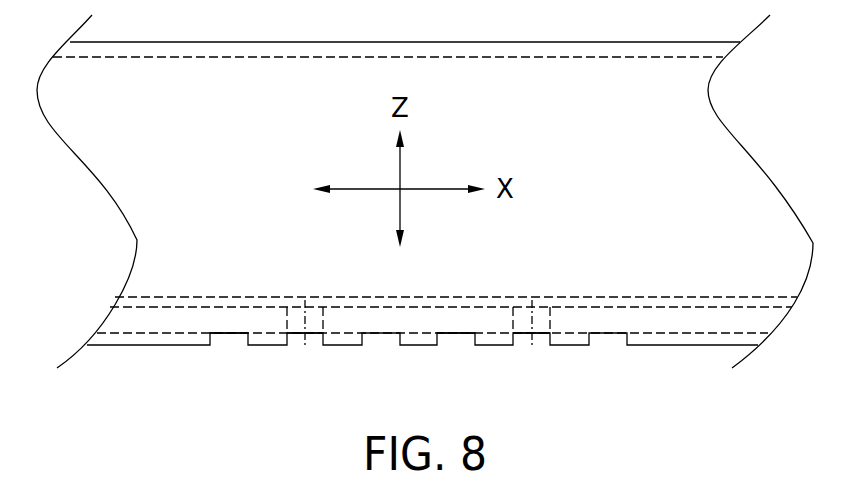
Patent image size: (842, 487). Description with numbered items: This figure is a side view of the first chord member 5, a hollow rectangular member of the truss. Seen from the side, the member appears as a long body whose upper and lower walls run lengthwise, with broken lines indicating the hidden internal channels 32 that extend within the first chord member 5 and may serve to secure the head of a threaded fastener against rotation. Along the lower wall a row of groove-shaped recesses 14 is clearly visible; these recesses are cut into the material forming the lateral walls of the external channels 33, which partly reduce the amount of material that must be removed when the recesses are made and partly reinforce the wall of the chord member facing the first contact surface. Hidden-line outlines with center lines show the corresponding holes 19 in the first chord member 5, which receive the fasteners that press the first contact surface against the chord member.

The first chord member 5 is at (425, 245).
The groove-shaped recesses 14 is at (230, 344).
The corresponding holes 19 is at (323, 320).
The internal channels 32 is at (163, 307).
The external channels 33 is at (190, 345).